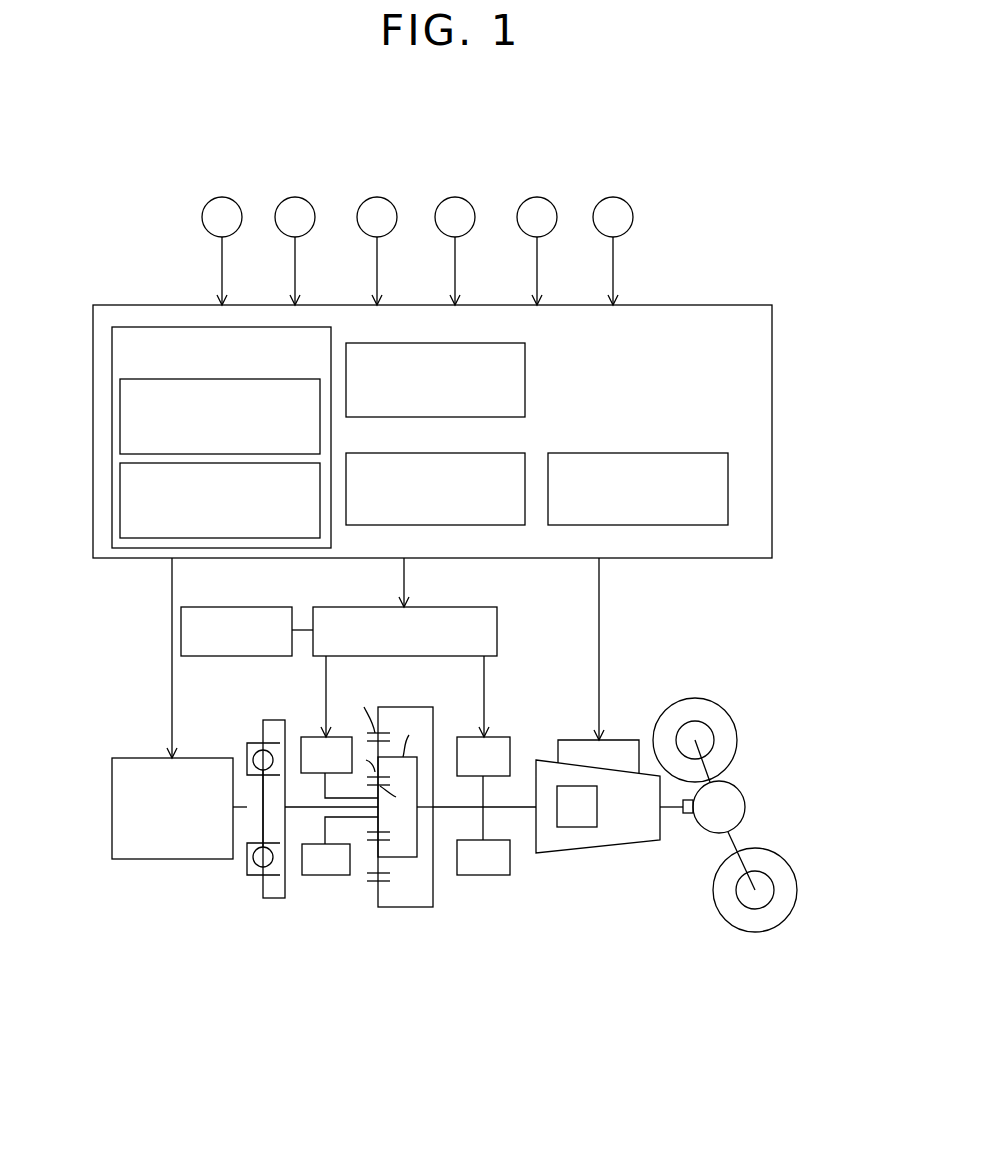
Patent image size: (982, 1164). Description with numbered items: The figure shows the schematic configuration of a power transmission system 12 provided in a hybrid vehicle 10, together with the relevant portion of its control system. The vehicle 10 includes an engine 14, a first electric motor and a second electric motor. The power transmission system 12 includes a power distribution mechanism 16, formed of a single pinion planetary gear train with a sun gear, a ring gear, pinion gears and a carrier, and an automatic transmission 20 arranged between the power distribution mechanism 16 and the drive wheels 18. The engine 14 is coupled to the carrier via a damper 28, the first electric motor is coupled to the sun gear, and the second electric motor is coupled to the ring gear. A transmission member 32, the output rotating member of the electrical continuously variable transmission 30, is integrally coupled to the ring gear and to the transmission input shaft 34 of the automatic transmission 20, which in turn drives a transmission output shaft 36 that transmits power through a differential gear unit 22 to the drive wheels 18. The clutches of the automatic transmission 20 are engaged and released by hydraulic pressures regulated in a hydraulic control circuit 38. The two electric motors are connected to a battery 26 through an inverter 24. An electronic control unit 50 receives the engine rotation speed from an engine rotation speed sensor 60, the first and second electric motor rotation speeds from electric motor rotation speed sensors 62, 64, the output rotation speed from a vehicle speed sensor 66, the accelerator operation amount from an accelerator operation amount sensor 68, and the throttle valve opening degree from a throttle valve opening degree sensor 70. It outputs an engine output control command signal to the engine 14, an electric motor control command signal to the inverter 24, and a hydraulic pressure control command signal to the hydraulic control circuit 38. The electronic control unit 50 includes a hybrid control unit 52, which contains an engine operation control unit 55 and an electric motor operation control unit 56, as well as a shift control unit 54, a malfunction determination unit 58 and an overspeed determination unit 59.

The vehicle 10 is at (665, 152).
The power transmission system 12 is at (608, 652).
The engine 14 is at (138, 843).
The power distribution mechanism 16 is at (375, 912).
The drive wheels 18 is at (723, 728).
The automatic transmission 20 is at (600, 833).
The differential gear unit 22 is at (732, 805).
The inverter 24 is at (463, 613).
The battery 26 is at (258, 613).
The damper 28 is at (253, 877).
The electrical continuously variable transmission 30 is at (417, 933).
The transmission member 32 is at (447, 812).
The transmission input shaft 34 is at (520, 812).
The transmission output shaft 36 is at (668, 812).
The hydraulic control circuit 38 is at (605, 748).
The electronic control unit 50 is at (757, 313).
The hybrid control unit 52 is at (130, 345).
The shift control unit 54 is at (505, 343).
The engine operation control unit 55 is at (122, 410).
The electric motor operation control unit 56 is at (122, 492).
The malfunction determination unit 58 is at (505, 453).
The overspeed determination unit 59 is at (705, 453).
The engine rotation speed sensor 60 is at (222, 208).
The electric motor rotation speed sensor 62 is at (295, 208).
The electric motor rotation speed sensor 64 is at (377, 208).
The vehicle speed sensor 66 is at (455, 208).
The accelerator operation amount sensor 68 is at (537, 208).
The throttle valve opening degree sensor 70 is at (613, 208).